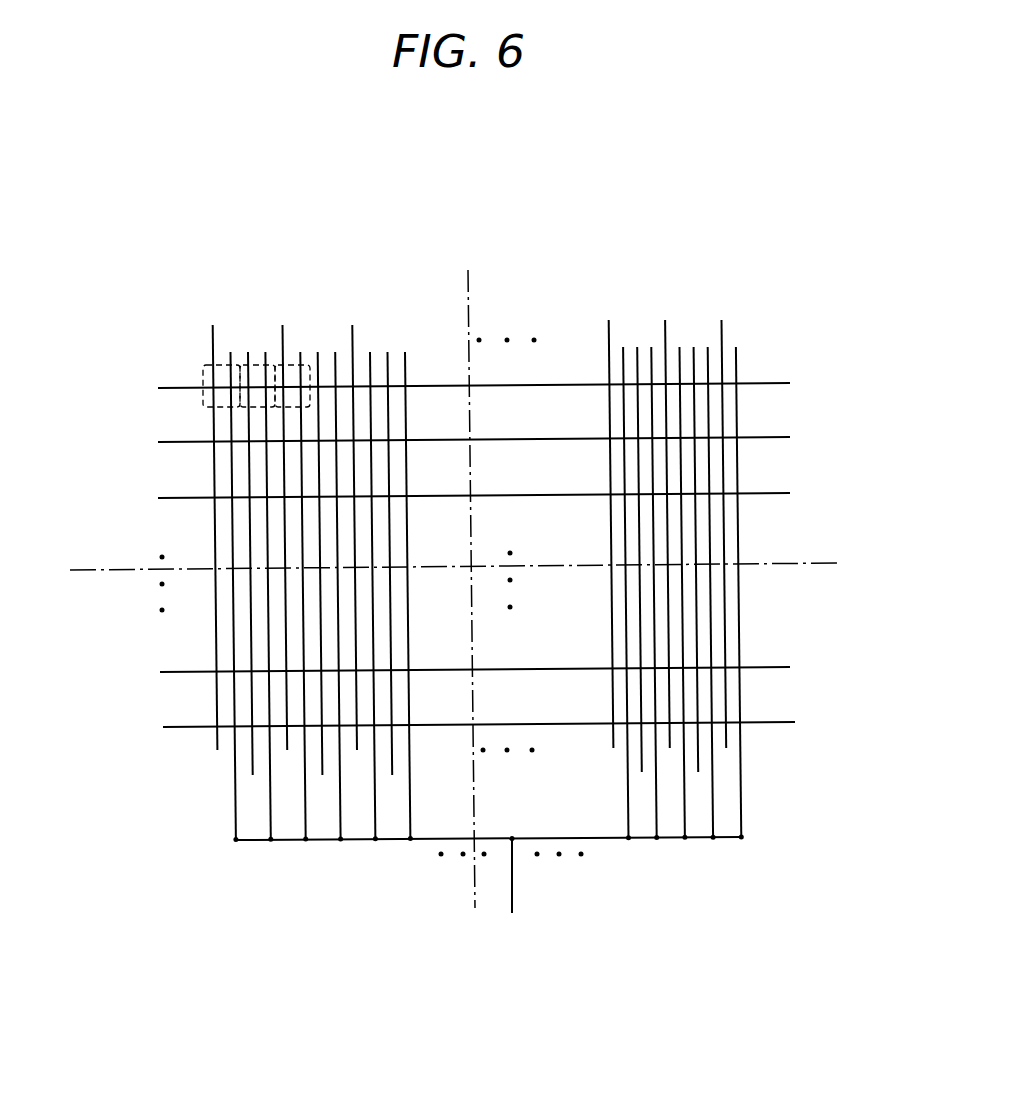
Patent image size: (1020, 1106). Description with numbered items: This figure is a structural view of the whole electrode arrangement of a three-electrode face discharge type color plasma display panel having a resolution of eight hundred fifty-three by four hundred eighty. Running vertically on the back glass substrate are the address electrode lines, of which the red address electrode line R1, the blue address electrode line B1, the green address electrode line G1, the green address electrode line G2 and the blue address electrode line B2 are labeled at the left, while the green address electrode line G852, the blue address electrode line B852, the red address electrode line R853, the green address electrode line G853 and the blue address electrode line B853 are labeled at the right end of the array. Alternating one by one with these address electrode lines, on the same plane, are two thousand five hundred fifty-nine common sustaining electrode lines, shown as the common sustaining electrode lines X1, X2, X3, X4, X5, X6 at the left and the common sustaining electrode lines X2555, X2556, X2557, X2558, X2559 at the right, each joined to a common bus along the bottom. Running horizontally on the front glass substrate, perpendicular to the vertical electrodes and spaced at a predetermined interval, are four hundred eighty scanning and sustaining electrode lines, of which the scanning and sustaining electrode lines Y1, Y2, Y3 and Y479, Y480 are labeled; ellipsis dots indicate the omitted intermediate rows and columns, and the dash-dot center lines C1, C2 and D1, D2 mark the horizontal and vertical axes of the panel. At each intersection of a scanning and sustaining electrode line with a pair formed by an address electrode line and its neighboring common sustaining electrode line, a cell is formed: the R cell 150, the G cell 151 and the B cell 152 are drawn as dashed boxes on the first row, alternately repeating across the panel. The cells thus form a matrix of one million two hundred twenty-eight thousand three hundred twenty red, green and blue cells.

The R cell 150 is at (203, 373).
The G cell 151 is at (257, 363).
The B cell 152 is at (293, 363).
The address electrode line R1 is at (265, 567).
The address electrode line B1 is at (280, 523).
The address electrode line G1 is at (254, 585).
The address electrode line G2 is at (351, 523).
The address electrode line B2 is at (393, 585).
The common sustaining electrode line X1 is at (234, 613).
The common sustaining electrode line X2 is at (269, 623).
The common sustaining electrode line X3 is at (311, 856).
The common sustaining electrode line X4 is at (344, 623).
The common sustaining electrode line X5 is at (379, 613).
The common sustaining electrode line X6 is at (414, 623).
The common sustaining electrode line X2555 is at (628, 839).
The common sustaining electrode line X2556 is at (657, 839).
The common sustaining electrode line X2557 is at (685, 839).
The common sustaining electrode line X2558 is at (713, 839).
The common sustaining electrode line X2559 is at (741, 839).
The address electrode line G852 is at (608, 503).
The address electrode line R853 is at (664, 518).
The address electrode line B853 is at (722, 503).
The address electrode line B852 is at (642, 770).
The address electrode line G853 is at (698, 756).
The scanning and sustaining electrode line Y1 is at (456, 388).
The scanning and sustaining electrode line Y2 is at (456, 443).
The scanning and sustaining electrode line Y3 is at (456, 500).
The scanning and sustaining electrode line Y479 is at (439, 675).
The scanning and sustaining electrode line Y480 is at (441, 731).
The horizontal center line C1 is at (473, 563).
The horizontal center line C2 is at (50, 571).
The vertical center line D1 is at (473, 612).
The vertical center line D2 is at (464, 247).